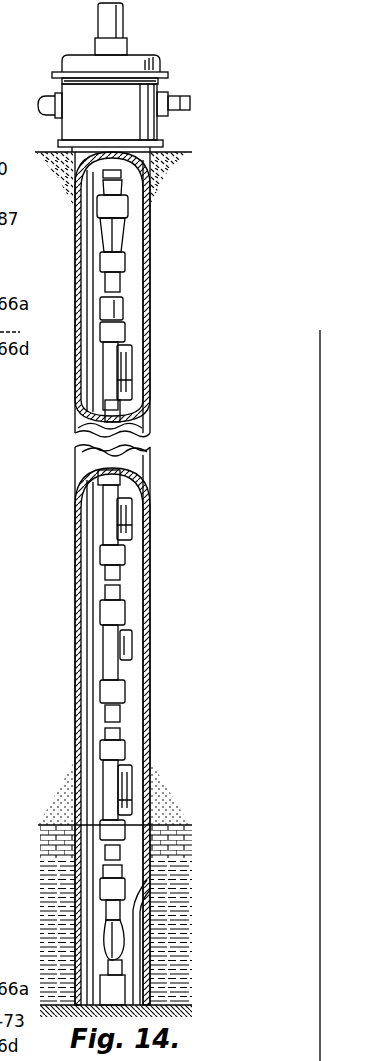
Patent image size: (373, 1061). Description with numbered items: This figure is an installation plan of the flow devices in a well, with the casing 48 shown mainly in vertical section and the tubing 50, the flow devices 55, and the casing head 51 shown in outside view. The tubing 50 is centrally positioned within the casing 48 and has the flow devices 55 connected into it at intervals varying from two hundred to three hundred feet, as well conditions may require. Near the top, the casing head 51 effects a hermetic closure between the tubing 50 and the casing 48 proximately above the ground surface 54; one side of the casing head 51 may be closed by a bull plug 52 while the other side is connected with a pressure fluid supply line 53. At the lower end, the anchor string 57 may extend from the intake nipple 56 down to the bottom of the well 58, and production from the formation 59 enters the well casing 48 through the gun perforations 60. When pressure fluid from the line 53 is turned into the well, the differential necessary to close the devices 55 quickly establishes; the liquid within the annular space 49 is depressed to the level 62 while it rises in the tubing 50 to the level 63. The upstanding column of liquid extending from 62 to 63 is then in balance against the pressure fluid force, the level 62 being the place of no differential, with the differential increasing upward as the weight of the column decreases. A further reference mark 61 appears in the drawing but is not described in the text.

The casing 48 is at (150, 228).
The annular space 49 is at (92, 533).
The tubing 50 is at (113, 24).
The casing head 51 is at (158, 63).
The bull plug 52 is at (38, 103).
The pressure fluid supply line 53 is at (186, 100).
The ground surface 54 is at (160, 151).
The flow devices 55 is at (130, 513).
The intake nipple 56 is at (105, 940).
The anchor string 57 is at (110, 965).
The bottom of the well 58 is at (160, 997).
The formation 59 is at (170, 923).
The gun perforations 60 is at (80, 878).
The joint 61 is at (83, 583).
The depressed liquid level in annular space 62 is at (85, 710).
The liquid level in tubing 63 is at (120, 311).